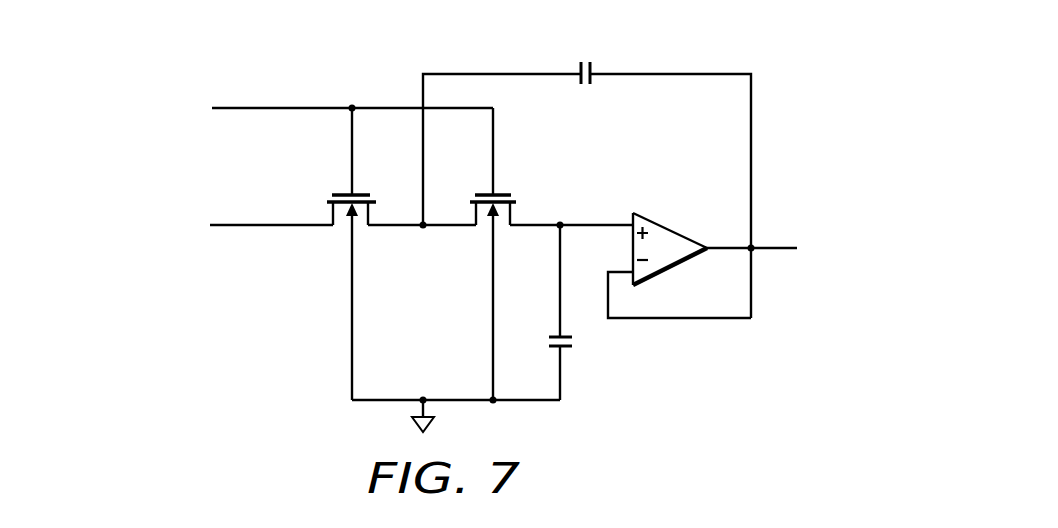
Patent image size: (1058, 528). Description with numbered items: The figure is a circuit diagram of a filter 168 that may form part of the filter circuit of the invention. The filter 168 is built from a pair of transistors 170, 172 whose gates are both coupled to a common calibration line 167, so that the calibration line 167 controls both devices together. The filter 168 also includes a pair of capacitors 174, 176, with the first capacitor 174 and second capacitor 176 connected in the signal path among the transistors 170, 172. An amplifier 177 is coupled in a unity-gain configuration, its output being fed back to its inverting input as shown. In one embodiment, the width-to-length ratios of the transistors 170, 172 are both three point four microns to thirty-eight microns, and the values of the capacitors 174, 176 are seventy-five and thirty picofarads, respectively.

The calibration line 167 is at (285, 107).
The filter 168 is at (276, 342).
The transistor 170 is at (342, 194).
The transistor 172 is at (500, 194).
The capacitor 174 is at (583, 59).
The capacitor 176 is at (573, 342).
The amplifier 177 is at (664, 224).